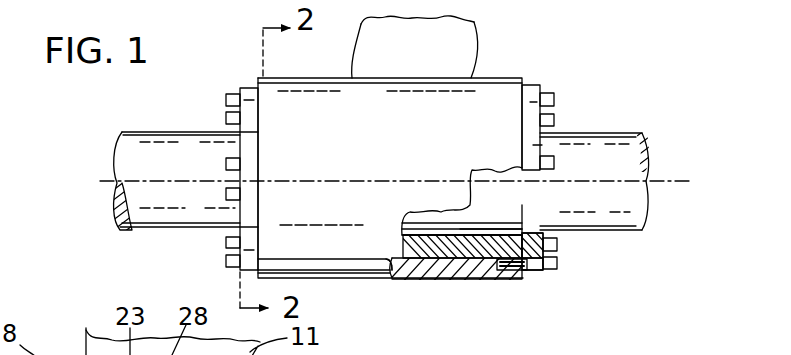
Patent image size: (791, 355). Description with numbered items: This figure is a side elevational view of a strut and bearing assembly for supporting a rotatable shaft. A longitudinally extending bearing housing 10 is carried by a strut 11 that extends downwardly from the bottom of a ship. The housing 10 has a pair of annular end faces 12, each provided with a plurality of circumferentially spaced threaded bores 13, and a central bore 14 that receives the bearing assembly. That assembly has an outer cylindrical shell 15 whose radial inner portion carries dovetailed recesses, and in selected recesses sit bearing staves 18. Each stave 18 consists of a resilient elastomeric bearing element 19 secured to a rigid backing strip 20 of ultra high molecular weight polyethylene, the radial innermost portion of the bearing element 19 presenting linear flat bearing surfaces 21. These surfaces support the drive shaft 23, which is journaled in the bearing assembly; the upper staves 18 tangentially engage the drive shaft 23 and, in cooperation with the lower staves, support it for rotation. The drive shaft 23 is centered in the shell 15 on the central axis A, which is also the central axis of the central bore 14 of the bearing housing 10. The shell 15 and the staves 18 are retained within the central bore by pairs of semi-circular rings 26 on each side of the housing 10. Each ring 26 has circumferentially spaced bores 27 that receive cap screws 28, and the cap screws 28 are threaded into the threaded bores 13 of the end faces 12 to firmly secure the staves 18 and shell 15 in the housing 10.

The bearing housing 10 is at (502, 76).
The strut 11 is at (462, 38).
The annular end faces 12 is at (245, 134).
The threaded bores 13 is at (492, 270).
The central bore 14 is at (435, 262).
The outer cylindrical shell 15 is at (469, 260).
The bearing staves 18 is at (424, 222).
The bearing element 19 is at (453, 234).
The rigid backing strip 20 is at (414, 242).
The bearing surfaces 21 is at (484, 234).
The drive shaft 23 is at (612, 230).
The semi-circular rings 26 is at (250, 92).
The bores 27 is at (540, 270).
The cap screws 28 is at (230, 100).
The central axis A is at (393, 182).